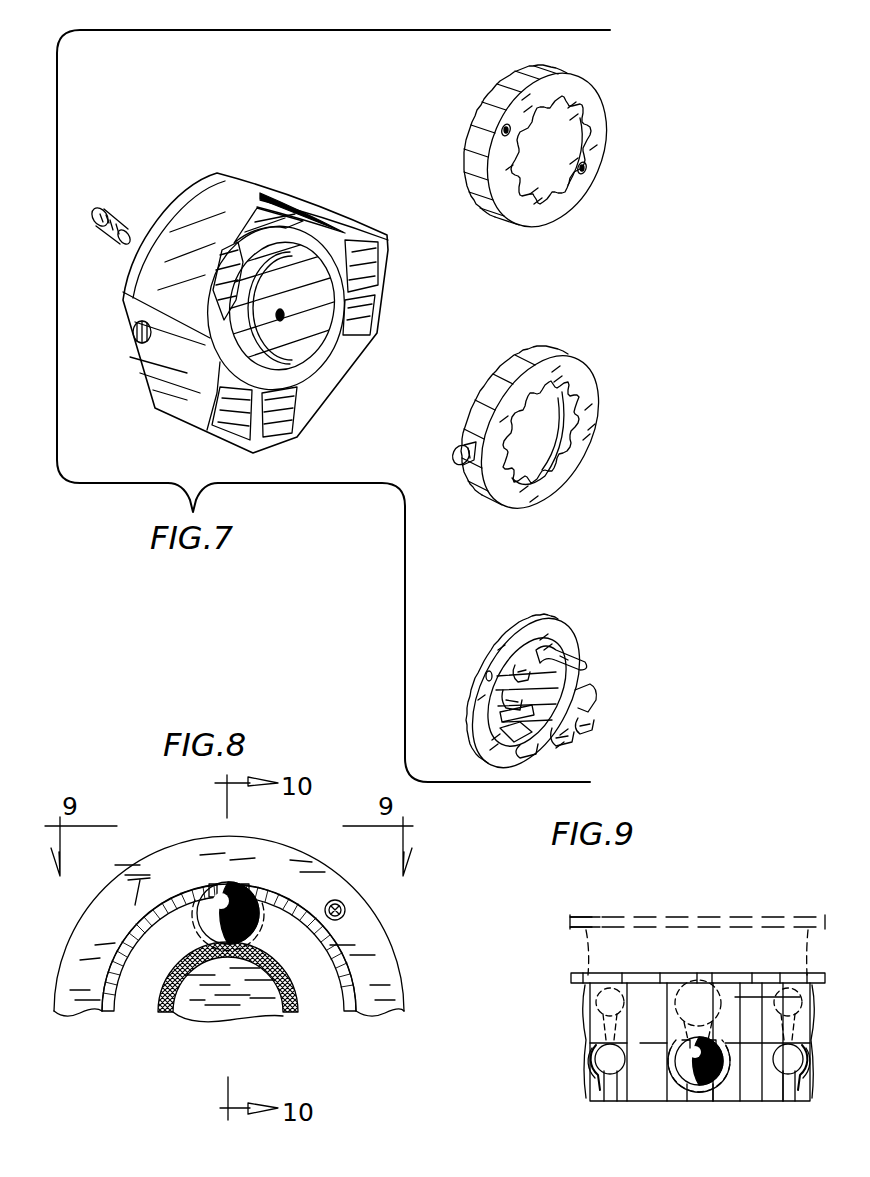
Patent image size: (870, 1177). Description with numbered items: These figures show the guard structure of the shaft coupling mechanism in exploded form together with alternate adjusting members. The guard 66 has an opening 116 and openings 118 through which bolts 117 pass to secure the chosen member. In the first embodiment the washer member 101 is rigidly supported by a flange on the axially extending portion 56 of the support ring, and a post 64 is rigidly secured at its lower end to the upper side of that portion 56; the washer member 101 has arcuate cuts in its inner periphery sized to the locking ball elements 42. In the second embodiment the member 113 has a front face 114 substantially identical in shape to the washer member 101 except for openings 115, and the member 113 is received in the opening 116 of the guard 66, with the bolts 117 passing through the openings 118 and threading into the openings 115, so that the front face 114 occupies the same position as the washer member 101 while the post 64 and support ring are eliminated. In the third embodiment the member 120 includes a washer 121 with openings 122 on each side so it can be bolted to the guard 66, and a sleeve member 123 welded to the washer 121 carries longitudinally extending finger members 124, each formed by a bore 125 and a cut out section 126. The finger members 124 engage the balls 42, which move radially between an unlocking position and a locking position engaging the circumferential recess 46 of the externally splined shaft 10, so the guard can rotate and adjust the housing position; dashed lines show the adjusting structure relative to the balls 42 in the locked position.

In FIG. 7, the guard 66 is at (304, 200).
In FIG. 7, the opening in the guard 116 is at (333, 250).
In FIG. 7, the bolts 117 is at (130, 220).
In FIG. 8, the bolts 117 is at (347, 908).
In FIG. 7, the openings in the guard 118 is at (285, 308).
In FIG. 7, the second embodiment member 113 is at (598, 83).
In FIG. 7, the front face 114 is at (592, 138).
In FIG. 7, the openings 115 is at (503, 126).
In FIG. 7, the axially extending portion 56 is at (508, 372).
In FIG. 7, the washer member 101 is at (588, 384).
In FIG. 7, the post 64 is at (463, 470).
In FIG. 7, the third embodiment member 120 is at (585, 623).
In FIG. 7, the washer 121 is at (523, 640).
In FIG. 8, the washer 121 is at (288, 869).
In FIG. 7, the openings 122 is at (490, 672).
In FIG. 8, the openings 122 is at (343, 902).
In FIG. 7, the sleeve member 123 is at (528, 645).
In FIG. 7, the finger members 124 is at (582, 700).
In FIG. 8, the finger members 124 is at (108, 967).
In FIG. 9, the finger members 124 is at (735, 1101).
In FIG. 7, the bore 125 is at (513, 658).
In FIG. 8, the bore 125 is at (134, 880).
In FIG. 9, the bore 125 is at (598, 1068).
In FIG. 7, the cut out section 126 is at (574, 718).
In FIG. 8, the cut out section 126 is at (136, 912).
In FIG. 9, the cut out section 126 is at (614, 1101).
In FIG. 8, the locking elements or balls 42 is at (233, 888).
In FIG. 9, the locking elements or balls 42 is at (703, 1088).
In FIG. 8, the circumferential recess 46 is at (180, 1022).
In FIG. 8, the externally splined shaft 10 is at (270, 1016).